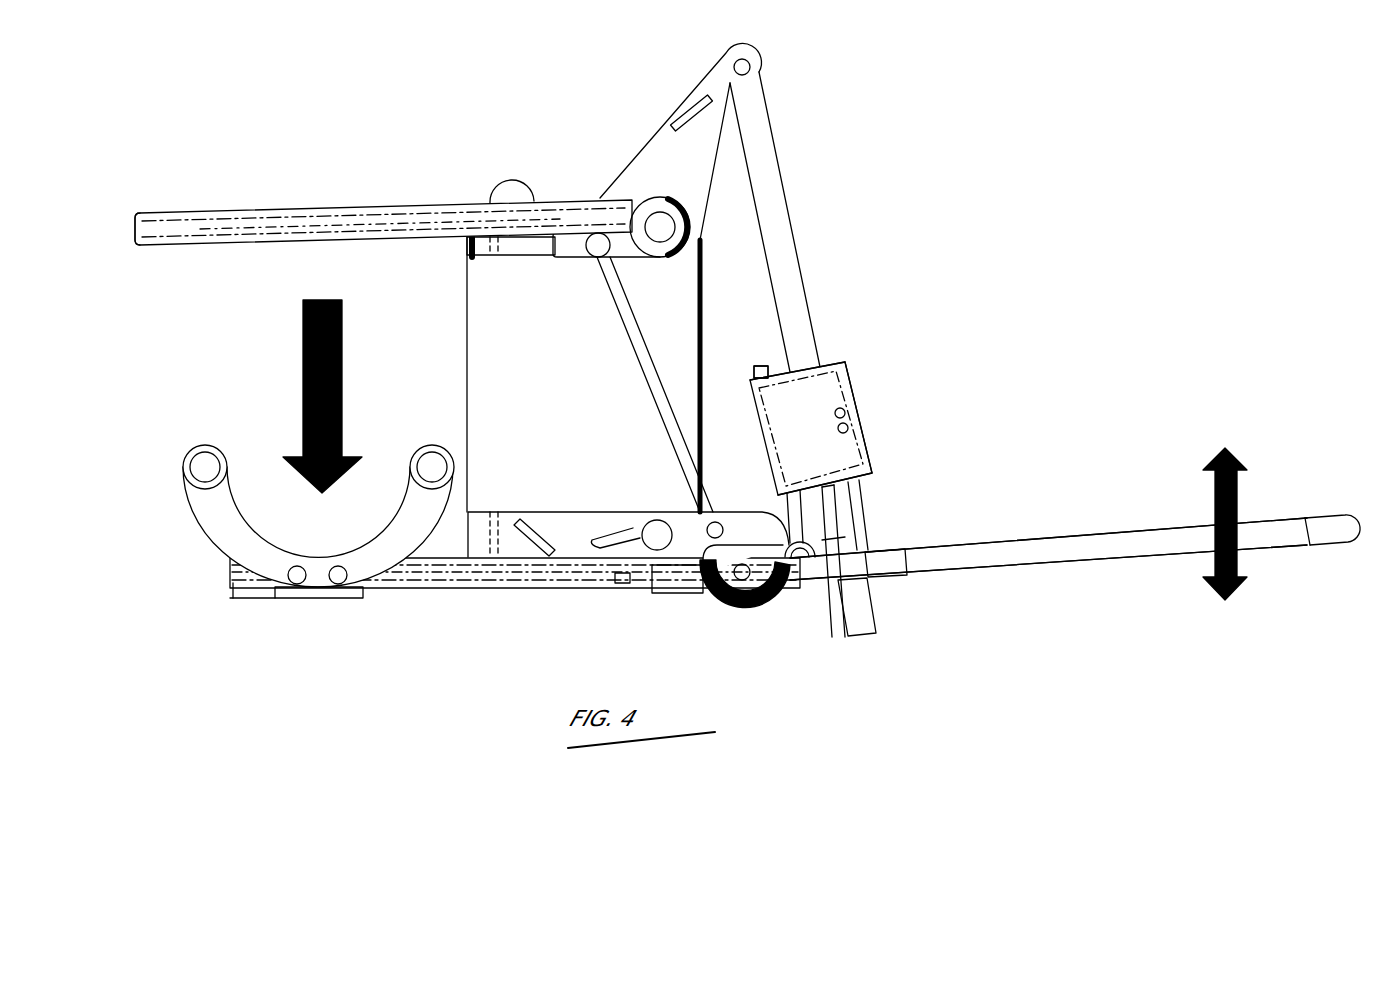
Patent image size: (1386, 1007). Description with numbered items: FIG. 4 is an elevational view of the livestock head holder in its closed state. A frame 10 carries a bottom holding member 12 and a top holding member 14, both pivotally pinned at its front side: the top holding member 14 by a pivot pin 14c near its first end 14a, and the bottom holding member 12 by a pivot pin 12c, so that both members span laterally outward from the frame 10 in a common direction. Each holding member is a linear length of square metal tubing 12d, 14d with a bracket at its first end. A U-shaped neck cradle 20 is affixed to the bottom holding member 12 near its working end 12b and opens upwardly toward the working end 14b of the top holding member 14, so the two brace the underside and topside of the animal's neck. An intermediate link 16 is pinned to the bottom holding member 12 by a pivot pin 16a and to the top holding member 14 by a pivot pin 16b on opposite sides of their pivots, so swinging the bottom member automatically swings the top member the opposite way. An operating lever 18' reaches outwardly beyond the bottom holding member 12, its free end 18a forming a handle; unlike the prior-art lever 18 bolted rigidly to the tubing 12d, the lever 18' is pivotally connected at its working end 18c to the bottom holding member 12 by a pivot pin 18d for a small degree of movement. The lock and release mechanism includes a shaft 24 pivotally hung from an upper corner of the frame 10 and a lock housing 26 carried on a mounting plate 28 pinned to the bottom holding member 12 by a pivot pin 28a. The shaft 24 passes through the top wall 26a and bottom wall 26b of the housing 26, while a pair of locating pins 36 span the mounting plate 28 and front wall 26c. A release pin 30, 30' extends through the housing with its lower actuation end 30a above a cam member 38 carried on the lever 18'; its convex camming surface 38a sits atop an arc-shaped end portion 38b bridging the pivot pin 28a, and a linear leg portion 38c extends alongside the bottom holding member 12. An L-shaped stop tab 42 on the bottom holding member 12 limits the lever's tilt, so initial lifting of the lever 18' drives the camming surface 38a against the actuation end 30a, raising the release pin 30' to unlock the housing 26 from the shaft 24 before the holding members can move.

The frame 10 is at (465, 310).
The bottom holding member 12 is at (495, 577).
The second working end 12b is at (233, 583).
The pivot pin 12c is at (645, 518).
The square metal tubing 12d is at (540, 577).
The top holding member 14 is at (342, 215).
The first end 14a is at (690, 230).
The second working end 14b is at (133, 228).
The pivot pin 14c is at (661, 224).
The square metal tubing 14d is at (380, 220).
The intermediate link 16 is at (642, 370).
The pivot pin 16a is at (698, 508).
The pivot pin 16b is at (593, 250).
The operating lever 18 is at (1048, 549).
The operating lever 18' is at (1048, 530).
The free end 18a is at (1357, 520).
The working end 18c is at (653, 595).
The pivot pin 18d is at (723, 598).
The U-shaped neck cradle 20 is at (352, 550).
The shaft 24 is at (793, 297).
The lock housing 26 is at (850, 460).
The top wall 26a is at (827, 362).
The bottom wall 26b is at (860, 484).
The front wall 26c is at (830, 395).
The mounting plate 28 is at (863, 482).
The pivot pin 28a is at (800, 565).
The stop 30 is at (761, 372).
The release pin 30' is at (753, 355).
The lower actuation end 30a is at (833, 522).
The locating pins 36 is at (848, 426).
The cam member 38 is at (762, 538).
The camming surface 38a is at (836, 538).
The arc-shaped end portion 38b is at (832, 610).
The linear leg portion 38c is at (741, 543).
The L-shaped stop tab 42 is at (623, 583).